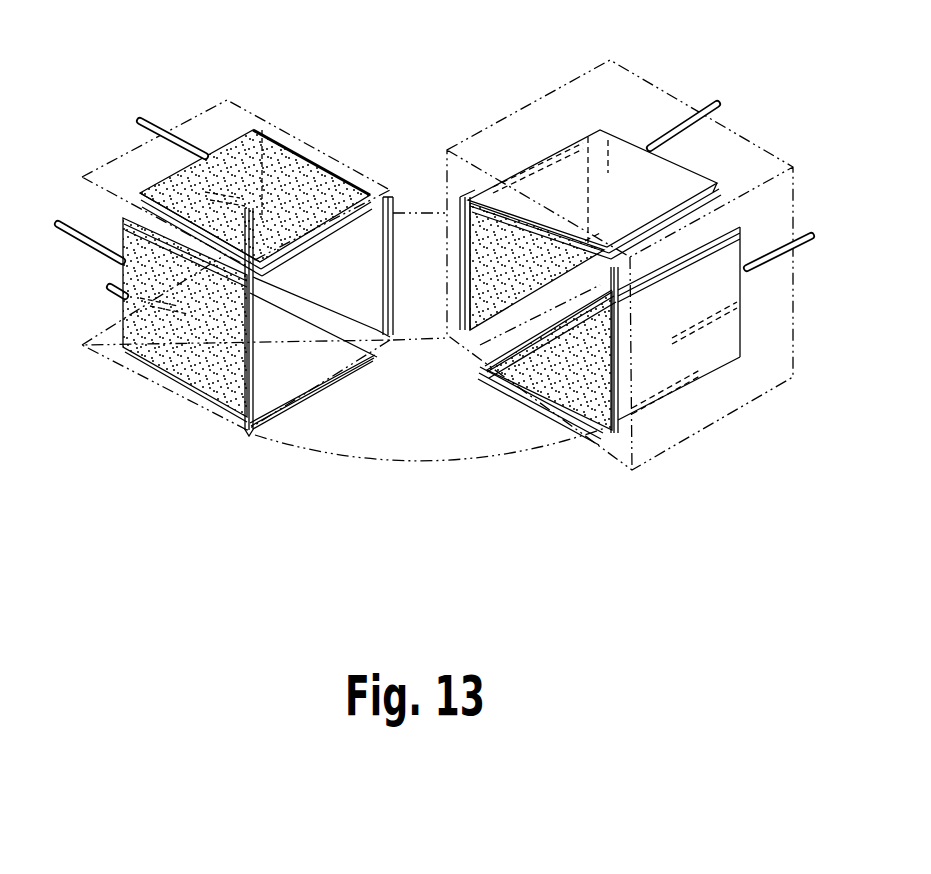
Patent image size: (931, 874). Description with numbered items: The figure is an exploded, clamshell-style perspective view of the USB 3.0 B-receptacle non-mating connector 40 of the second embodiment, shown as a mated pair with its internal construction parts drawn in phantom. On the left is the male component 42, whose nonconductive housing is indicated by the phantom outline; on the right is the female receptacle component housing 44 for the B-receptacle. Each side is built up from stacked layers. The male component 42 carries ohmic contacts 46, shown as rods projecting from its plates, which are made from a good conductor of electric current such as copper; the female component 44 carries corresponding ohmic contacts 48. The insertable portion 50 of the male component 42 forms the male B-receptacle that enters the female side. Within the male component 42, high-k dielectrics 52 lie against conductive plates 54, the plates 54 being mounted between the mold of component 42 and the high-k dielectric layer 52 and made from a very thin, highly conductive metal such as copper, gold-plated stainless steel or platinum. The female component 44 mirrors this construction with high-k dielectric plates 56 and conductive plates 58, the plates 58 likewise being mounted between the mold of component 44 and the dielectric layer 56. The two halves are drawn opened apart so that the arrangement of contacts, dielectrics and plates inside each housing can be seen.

The USB 3.0 B-receptacle non-mating connector 40 is at (413, 95).
The male component 42 is at (106, 163).
The female receptacle component housing 44 is at (757, 140).
The ohmic contacts 46 is at (157, 130).
The ohmic contacts 48 is at (607, 140).
The insertable portion 50 is at (312, 140).
The high-k dielectrics 52 is at (312, 190).
The conductive plates 54 is at (357, 217).
The high-k dielectric plates 56 is at (490, 230).
The conductive plates 58 is at (597, 125).